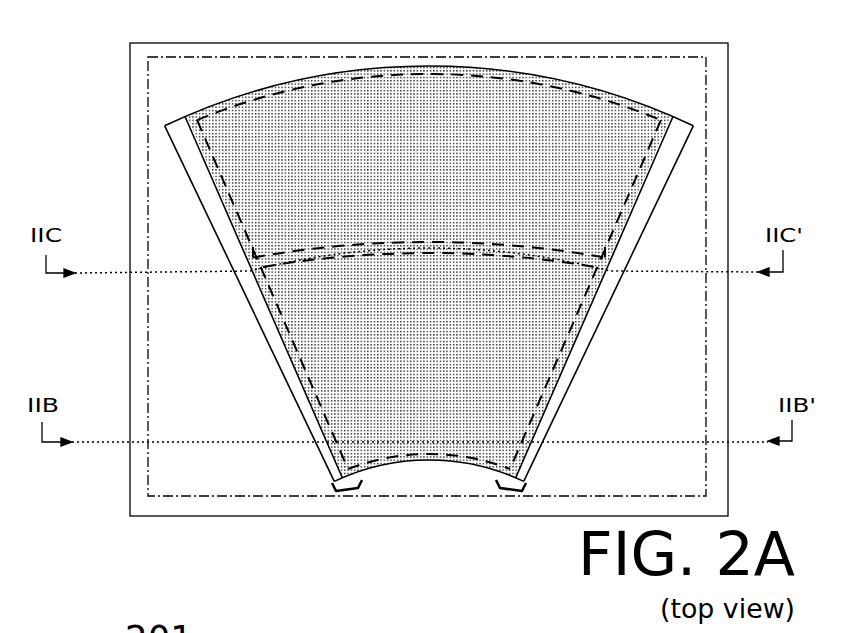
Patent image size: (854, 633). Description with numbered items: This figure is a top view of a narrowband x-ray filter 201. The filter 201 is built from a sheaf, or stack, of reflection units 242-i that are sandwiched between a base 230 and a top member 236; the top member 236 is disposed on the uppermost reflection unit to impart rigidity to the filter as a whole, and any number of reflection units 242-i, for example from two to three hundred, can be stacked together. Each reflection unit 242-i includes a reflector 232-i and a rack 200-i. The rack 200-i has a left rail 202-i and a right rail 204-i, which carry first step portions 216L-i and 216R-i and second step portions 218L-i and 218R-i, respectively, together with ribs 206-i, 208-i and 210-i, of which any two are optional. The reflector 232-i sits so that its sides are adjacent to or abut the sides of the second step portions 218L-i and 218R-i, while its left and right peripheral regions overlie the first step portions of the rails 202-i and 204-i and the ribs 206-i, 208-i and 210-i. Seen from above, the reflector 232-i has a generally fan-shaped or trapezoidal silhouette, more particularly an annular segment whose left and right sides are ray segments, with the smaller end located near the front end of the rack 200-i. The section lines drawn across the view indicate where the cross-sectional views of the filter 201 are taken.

The narrowband x-ray filter 201 is at (180, 530).
The rack 200-i is at (620, 93).
The rail 202-i is at (352, 478).
The rail 204-i is at (510, 480).
The rib 206-i is at (433, 462).
The rib 208-i is at (402, 255).
The rib 210-i is at (223, 108).
The first step portion 216L-i is at (195, 142).
The first step portion 216R-i is at (667, 128).
The second step portion 218L-i is at (177, 140).
The second step portion 218R-i is at (683, 132).
The reflector 232-i is at (458, 223).
The top member 236 is at (687, 290).
The base 230 is at (715, 342).
The reflection unit 242-i is at (457, 470).